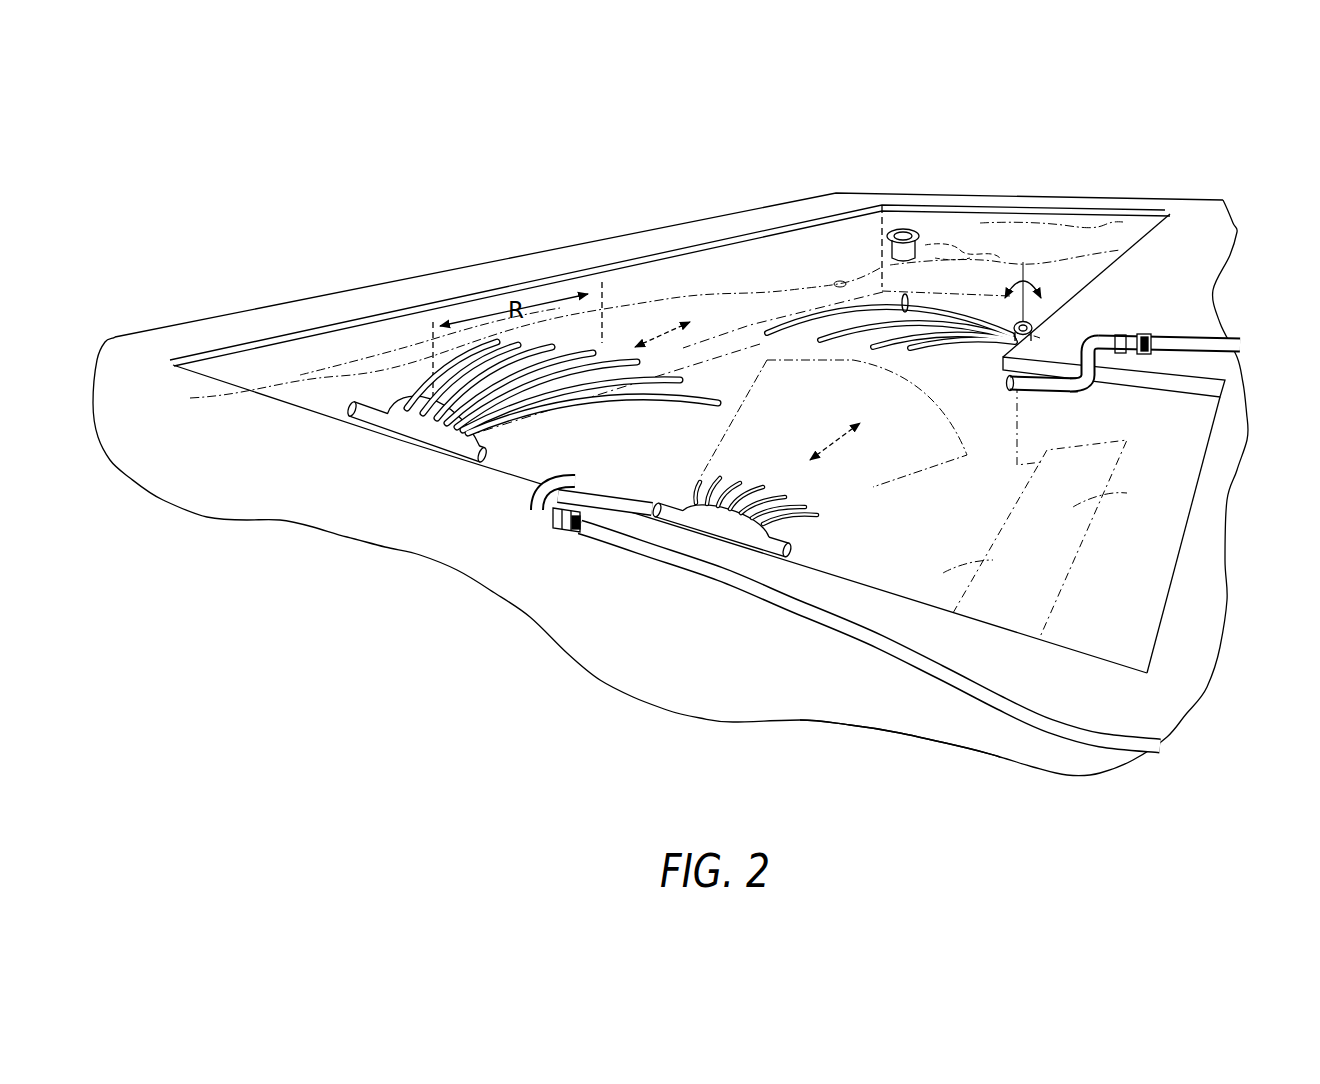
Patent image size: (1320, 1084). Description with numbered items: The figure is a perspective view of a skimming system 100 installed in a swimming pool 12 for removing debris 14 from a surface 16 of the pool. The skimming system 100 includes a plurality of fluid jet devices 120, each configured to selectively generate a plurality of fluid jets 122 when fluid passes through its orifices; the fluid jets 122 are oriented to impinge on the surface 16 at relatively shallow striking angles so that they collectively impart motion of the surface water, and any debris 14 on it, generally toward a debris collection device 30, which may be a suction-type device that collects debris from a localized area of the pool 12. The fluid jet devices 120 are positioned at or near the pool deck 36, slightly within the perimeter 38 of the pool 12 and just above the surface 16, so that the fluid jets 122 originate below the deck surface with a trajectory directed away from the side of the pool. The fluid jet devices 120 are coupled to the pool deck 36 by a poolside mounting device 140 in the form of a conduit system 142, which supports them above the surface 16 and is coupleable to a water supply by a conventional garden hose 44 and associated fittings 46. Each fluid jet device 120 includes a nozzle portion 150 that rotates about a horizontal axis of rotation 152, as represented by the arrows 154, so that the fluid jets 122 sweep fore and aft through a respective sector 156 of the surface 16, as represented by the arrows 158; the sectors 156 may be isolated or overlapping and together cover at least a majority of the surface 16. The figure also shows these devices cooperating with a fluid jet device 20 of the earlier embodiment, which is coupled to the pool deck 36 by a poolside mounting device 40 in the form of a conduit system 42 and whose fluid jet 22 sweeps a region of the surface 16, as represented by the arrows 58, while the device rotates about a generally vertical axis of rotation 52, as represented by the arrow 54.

The skimming system 100 is at (470, 188).
The swimming pool 12 is at (683, 232).
The debris 14 is at (833, 283).
The surface of the pool 16 is at (988, 432).
The fluid jet device 20 is at (1047, 325).
The fluid jet 22 is at (873, 653).
The debris collection device 30 is at (920, 240).
The pool deck 36 is at (592, 253).
The perimeter of the pool 38 is at (542, 278).
The poolside mounting device 40 is at (1033, 403).
The conduit system 42 is at (1050, 387).
The garden hose 44 is at (1210, 340).
The fittings 46 is at (1143, 338).
The axis of rotation 52 is at (1023, 262).
The arrow 54 is at (1040, 282).
The arrows 58 is at (755, 360).
The fluid jet device 120 is at (437, 477).
The fluid jets 122 is at (478, 357).
The poolside mounting device 140 is at (513, 523).
The conduit system 142 is at (517, 503).
The nozzle portion 150 is at (403, 427).
The axis of rotation 152 is at (293, 398).
The arrows 154 is at (363, 397).
The sector 156 is at (900, 485).
The arrows 158 is at (668, 338).